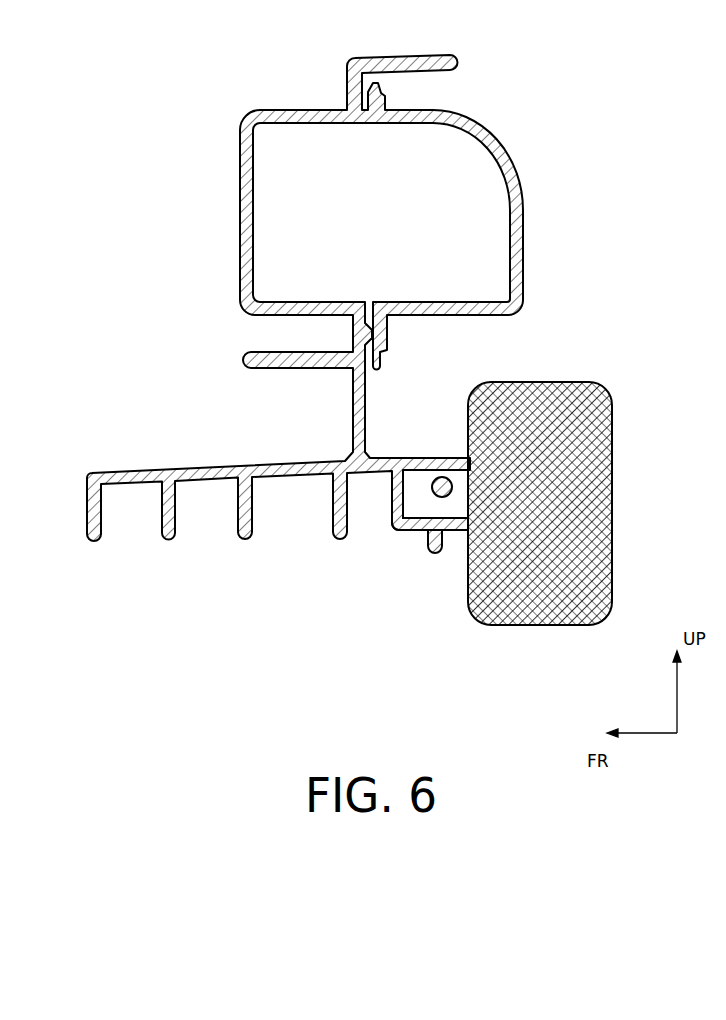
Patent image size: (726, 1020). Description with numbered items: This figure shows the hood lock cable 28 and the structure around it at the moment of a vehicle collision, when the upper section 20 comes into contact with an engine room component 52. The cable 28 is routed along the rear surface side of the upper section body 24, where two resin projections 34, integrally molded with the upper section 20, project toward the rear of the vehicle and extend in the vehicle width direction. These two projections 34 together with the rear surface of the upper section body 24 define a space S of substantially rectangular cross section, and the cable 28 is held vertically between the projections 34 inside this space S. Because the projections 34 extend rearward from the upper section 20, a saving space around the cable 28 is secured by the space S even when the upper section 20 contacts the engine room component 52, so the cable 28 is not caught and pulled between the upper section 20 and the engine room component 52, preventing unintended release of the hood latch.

The upper section 20 is at (338, 293).
The upper section body 24 is at (475, 118).
The projections 34 is at (420, 457).
The cable 28 is at (443, 500).
The engine room component 52 is at (598, 493).
The space S is at (417, 508).